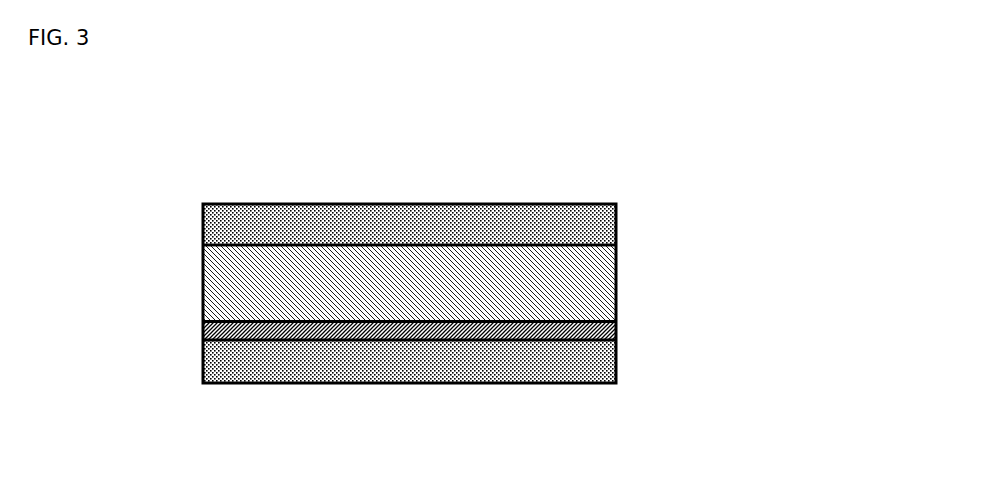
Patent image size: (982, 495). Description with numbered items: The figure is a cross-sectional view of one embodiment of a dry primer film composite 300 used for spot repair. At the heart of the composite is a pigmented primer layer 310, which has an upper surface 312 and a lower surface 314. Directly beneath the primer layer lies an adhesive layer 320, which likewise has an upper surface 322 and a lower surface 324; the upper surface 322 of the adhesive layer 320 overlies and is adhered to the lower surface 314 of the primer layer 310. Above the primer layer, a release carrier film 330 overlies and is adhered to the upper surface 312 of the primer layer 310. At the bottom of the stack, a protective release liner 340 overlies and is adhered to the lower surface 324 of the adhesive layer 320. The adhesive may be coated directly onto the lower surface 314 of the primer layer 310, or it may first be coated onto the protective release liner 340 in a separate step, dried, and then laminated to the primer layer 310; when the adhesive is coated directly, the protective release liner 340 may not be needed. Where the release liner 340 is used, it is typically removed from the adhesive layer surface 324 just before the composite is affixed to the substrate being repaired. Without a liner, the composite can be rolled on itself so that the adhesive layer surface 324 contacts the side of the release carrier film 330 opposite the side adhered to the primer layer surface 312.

The dry primer film composite 300 is at (417, 289).
The pigmented primer layer 310 is at (417, 275).
The upper surface 312 is at (232, 248).
The lower surface 314 is at (232, 322).
The adhesive layer 320 is at (478, 379).
The upper surface 322 is at (402, 323).
The lower surface 324 is at (500, 342).
The release carrier film 330 is at (616, 221).
The protective release liner 340 is at (600, 364).